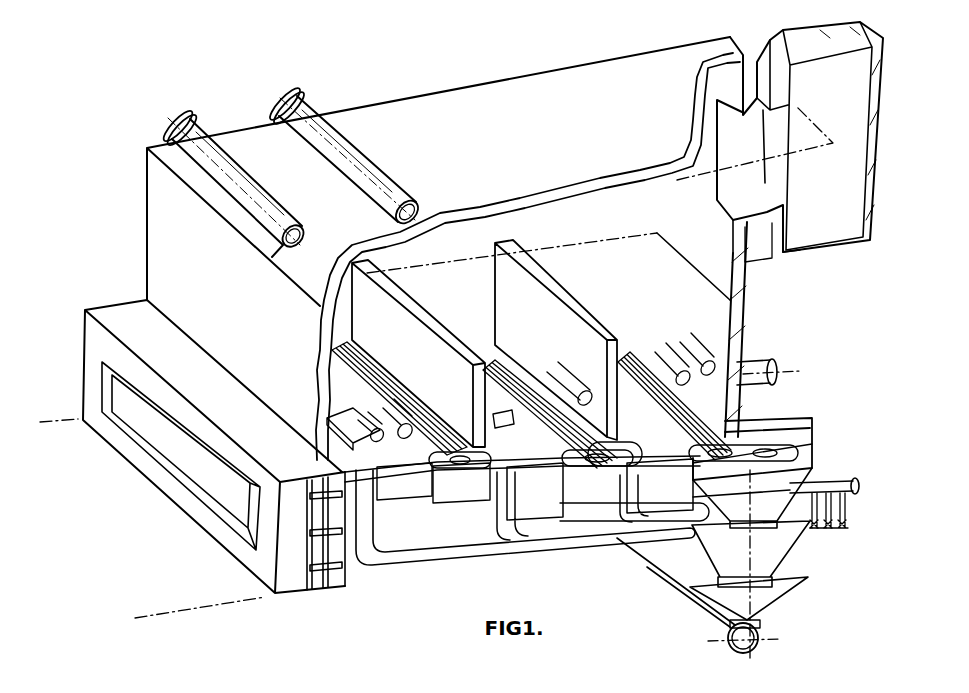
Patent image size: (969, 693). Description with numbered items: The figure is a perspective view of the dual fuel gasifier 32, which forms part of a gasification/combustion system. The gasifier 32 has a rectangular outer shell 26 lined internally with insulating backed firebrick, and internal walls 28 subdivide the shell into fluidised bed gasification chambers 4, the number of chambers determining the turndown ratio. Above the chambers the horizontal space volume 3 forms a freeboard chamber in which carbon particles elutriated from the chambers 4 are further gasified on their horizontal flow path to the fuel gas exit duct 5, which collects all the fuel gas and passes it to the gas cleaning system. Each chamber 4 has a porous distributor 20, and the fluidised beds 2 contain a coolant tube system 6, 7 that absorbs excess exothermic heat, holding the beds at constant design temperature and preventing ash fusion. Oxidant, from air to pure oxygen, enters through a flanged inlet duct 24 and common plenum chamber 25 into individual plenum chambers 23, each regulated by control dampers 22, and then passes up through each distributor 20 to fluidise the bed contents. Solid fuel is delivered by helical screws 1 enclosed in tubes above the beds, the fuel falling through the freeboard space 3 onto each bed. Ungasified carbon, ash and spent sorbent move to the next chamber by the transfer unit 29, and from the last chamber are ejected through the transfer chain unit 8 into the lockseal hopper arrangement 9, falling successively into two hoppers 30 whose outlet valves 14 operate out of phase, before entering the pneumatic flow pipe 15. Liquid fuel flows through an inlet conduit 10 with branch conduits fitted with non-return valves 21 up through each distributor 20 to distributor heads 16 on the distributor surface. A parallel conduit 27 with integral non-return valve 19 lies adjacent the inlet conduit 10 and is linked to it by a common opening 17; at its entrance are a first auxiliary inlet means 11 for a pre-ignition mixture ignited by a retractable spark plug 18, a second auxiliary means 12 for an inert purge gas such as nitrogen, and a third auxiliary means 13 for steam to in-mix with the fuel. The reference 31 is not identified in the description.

The helical screws 1 is at (289, 86).
The fluidised beds 2 is at (463, 270).
The horizontal space volume 3 is at (598, 201).
The fluidised bed gasification chambers 4 is at (749, 317).
The fuel gas exit duct 5 is at (851, 256).
The coolant tube system 6 is at (774, 363).
The coolant tube system 7 is at (677, 342).
The transfer chain unit 8 is at (815, 436).
The lockseal hopper arrangement 9 is at (820, 446).
The inlet conduit 10 is at (864, 481).
The first auxiliary inlet means 11 is at (845, 534).
The second auxiliary means 12 is at (831, 534).
The third auxiliary means 13 is at (815, 536).
The outlet valves 14 is at (774, 591).
The pneumatic flow pipe 15 is at (768, 641).
The distributor heads 16 is at (508, 429).
The common opening 17 is at (511, 484).
The retractable spark plug 18 is at (484, 490).
The non-return valve 19 is at (497, 497).
The porous distributors 20 is at (395, 475).
The non-return valves 21 is at (384, 521).
The control dampers 22 is at (343, 574).
The individual plenum chambers 23 is at (302, 549).
The flanged inlet duct 24 is at (121, 437).
The common plenum chamber 25 is at (120, 303).
The rectangular outer shell 26 is at (143, 247).
The parallel conduit 27 is at (456, 563).
The internal walls 28 is at (577, 291).
The transfer unit 29 is at (637, 447).
The hoppers 30 is at (708, 562).
The channel 31 is at (711, 191).
The dual fuel gasifier 32 is at (438, 171).